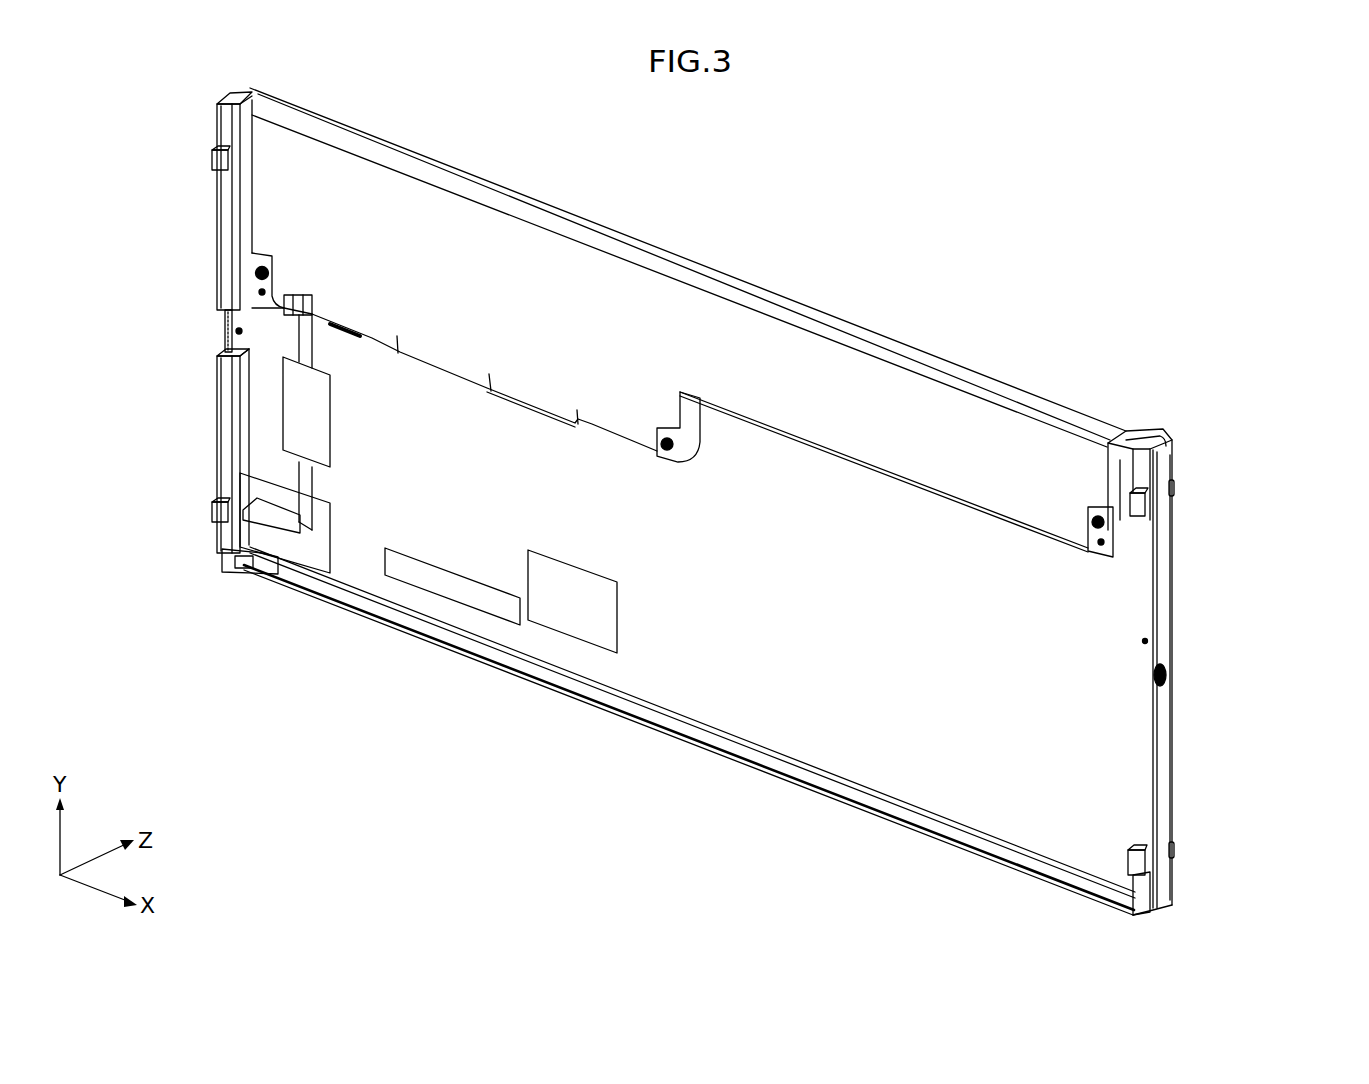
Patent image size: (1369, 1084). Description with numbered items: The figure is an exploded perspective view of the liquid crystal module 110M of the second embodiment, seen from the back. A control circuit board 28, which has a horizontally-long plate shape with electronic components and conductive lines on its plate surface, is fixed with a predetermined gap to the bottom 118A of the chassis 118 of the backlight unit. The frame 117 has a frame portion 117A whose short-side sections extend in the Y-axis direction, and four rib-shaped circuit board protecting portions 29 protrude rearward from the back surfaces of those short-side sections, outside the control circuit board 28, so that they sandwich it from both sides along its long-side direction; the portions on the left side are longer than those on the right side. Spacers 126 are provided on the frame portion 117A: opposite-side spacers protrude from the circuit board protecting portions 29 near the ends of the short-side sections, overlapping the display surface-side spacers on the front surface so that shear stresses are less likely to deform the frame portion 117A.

The control circuit board 28 is at (601, 292).
The circuit board protecting portion 29 is at (226, 128).
The spacer 126 is at (721, 527).
The frame 117 is at (1174, 735).
The frame portion 117A is at (1165, 612).
The chassis 118 is at (697, 690).
The bottom 118A is at (820, 730).
The liquid crystal module 110M is at (510, 752).